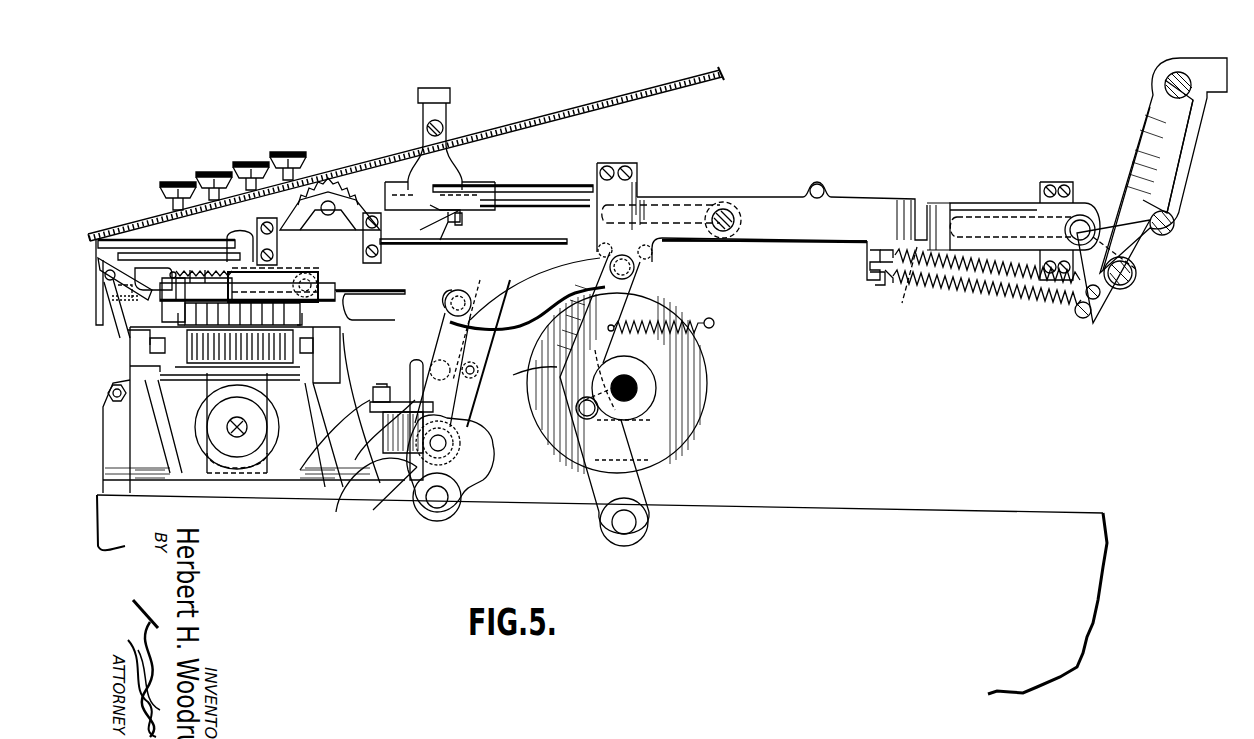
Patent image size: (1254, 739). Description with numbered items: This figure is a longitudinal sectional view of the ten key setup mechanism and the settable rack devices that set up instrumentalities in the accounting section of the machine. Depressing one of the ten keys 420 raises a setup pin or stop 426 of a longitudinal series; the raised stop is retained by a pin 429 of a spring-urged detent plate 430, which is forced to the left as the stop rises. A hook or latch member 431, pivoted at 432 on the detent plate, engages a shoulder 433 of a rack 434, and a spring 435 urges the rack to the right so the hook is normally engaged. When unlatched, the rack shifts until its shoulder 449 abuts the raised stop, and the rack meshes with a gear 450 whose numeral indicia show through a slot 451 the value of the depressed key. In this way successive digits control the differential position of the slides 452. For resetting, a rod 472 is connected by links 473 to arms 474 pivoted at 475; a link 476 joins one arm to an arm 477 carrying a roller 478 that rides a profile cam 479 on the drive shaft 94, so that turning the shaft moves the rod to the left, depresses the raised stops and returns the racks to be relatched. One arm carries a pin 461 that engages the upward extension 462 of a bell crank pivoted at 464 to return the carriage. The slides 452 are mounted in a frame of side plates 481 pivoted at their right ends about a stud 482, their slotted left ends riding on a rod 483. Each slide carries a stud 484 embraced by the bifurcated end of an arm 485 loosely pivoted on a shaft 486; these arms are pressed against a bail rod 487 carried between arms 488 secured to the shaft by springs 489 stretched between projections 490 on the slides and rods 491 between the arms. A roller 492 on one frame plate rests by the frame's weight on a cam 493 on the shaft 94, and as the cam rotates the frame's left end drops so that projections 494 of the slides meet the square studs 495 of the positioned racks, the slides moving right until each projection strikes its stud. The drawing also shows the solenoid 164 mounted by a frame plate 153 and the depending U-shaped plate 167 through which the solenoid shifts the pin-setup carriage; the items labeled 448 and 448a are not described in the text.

The drive shaft 94 is at (638, 389).
The frame plate 153 is at (267, 458).
The solenoid 164 is at (272, 410).
The U-shaped plate 167 is at (214, 393).
The ten keys 420 is at (218, 175).
The setup pins or stops 426 is at (255, 283).
The pins 429 is at (190, 338).
The detent plate 430 is at (150, 333).
The hook or latch member 431 is at (140, 272).
The pivot 432 is at (125, 305).
The shoulder 433 is at (140, 262).
The rack 434 is at (195, 266).
The spring 435 is at (201, 285).
The rod 448 is at (95, 240).
The rod arm 448a is at (101, 258).
The shoulder 449 is at (172, 280).
The gear 450 is at (400, 206).
The slot 451 is at (326, 190).
The slides 452 is at (806, 244).
The pin 461 is at (410, 373).
The upward extension 462 is at (355, 438).
The pivot 464 is at (358, 466).
The rod 472 is at (327, 302).
The links 473 is at (403, 300).
The arms 474 is at (450, 344).
The pivot 475 is at (445, 445).
The link 476 is at (545, 296).
The arm 477 is at (549, 380).
The roller 478 is at (574, 411).
The profile cam 479 is at (640, 430).
The side plates 481 is at (846, 211).
The stud 482 is at (1082, 215).
The rod 483 is at (728, 210).
The stud 484 is at (1115, 290).
The arm 485 is at (1160, 108).
The shaft 486 is at (1185, 78).
The bail rod 487 is at (1168, 216).
The arms 488 is at (1145, 128).
The springs 489 is at (1010, 290).
The projections 490 is at (880, 285).
The rods 491 is at (1088, 316).
The roller 492 is at (637, 270).
The cam 493 is at (685, 448).
The projections 494 is at (445, 215).
The square studs 495 is at (490, 223).